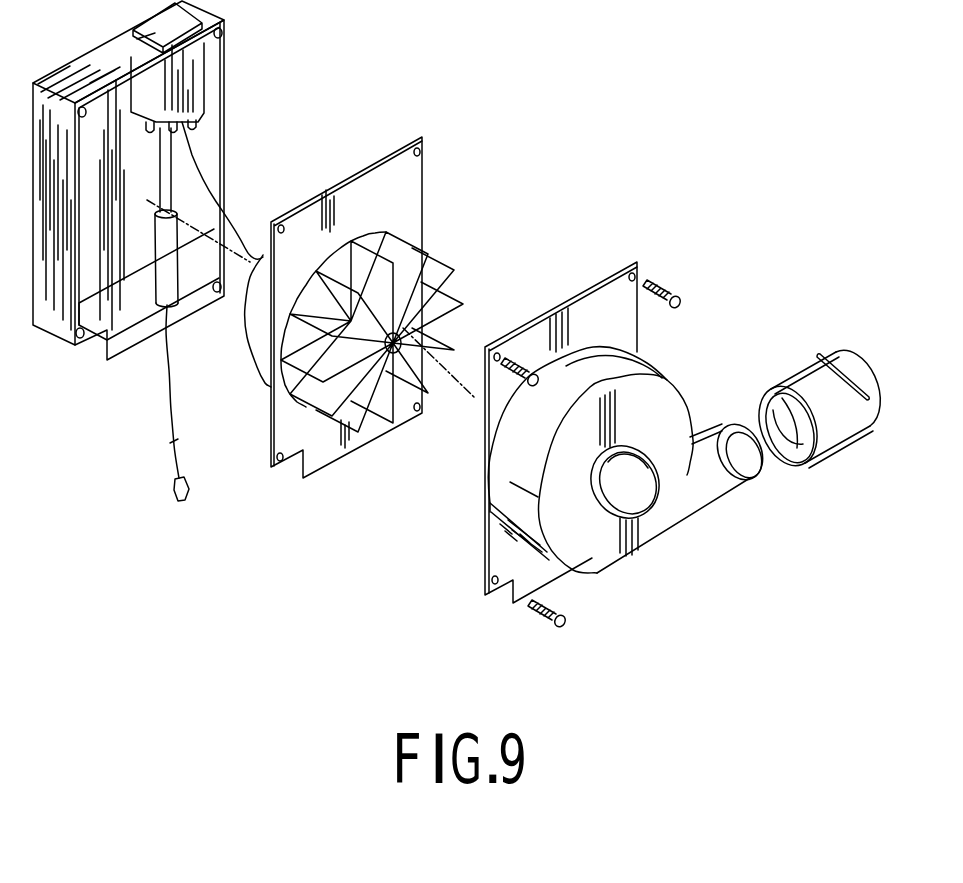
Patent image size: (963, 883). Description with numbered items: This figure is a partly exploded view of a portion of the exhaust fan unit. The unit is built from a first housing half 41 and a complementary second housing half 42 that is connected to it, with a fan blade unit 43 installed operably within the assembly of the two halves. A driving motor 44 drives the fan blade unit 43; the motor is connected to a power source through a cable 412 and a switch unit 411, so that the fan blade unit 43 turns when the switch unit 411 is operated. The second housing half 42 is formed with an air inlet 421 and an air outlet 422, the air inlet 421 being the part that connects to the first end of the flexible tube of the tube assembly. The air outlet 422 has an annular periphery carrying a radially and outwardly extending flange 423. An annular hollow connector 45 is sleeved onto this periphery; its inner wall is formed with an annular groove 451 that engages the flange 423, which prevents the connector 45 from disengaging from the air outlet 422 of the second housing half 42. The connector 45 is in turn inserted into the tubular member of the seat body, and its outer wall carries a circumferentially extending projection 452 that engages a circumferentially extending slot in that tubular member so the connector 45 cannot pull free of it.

The first housing half 41 is at (225, 14).
The switch unit 411 is at (130, 56).
The cable 412 is at (168, 168).
The second housing half 42 is at (602, 279).
The air inlet 421 is at (634, 494).
The air outlet 422 is at (765, 465).
The flange 423 is at (742, 423).
The fan blade unit 43 is at (405, 257).
The driving motor 44 is at (250, 262).
The annular hollow connector 45 is at (795, 372).
The annular groove 451 is at (790, 423).
The circumferentially extending projection 452 is at (843, 350).